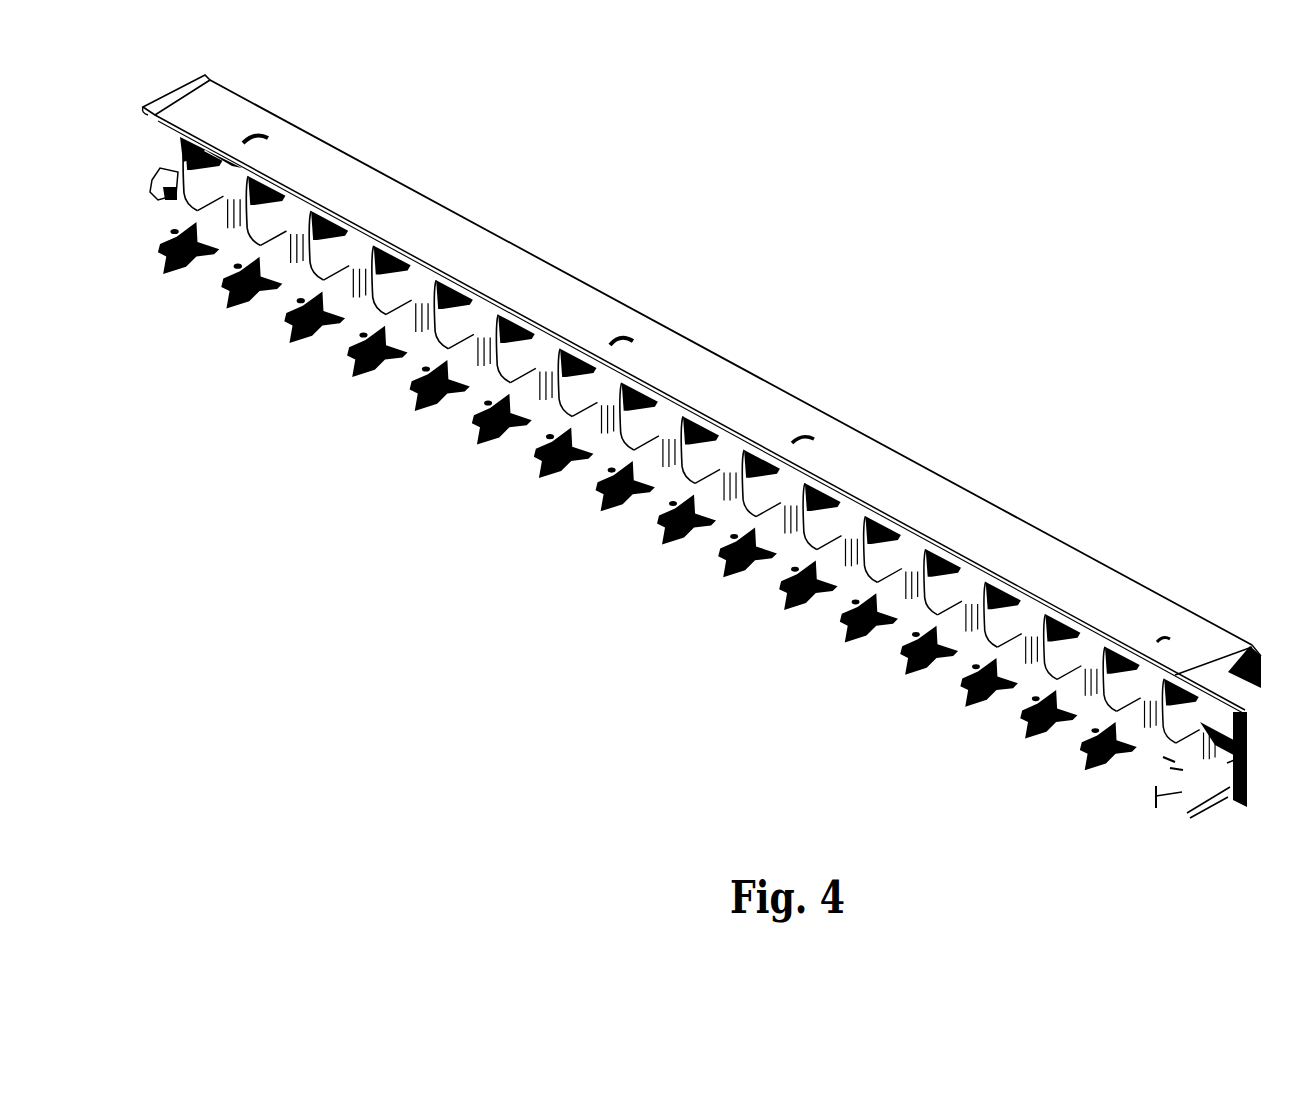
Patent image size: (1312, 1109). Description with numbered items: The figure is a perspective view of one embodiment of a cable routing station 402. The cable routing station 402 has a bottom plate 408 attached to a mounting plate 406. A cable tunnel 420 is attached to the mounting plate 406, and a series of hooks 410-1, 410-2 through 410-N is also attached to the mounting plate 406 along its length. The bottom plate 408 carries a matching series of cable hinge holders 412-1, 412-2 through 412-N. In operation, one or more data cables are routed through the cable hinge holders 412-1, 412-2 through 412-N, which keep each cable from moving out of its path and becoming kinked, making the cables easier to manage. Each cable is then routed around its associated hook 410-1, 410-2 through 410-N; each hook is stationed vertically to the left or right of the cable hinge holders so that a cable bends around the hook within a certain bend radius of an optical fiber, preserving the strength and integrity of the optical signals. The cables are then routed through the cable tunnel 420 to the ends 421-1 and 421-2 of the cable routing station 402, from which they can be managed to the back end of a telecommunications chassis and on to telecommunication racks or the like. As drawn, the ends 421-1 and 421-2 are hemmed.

The cable routing station 402 is at (694, 288).
The mounting plate 406 is at (782, 392).
The bottom plate 408 is at (1140, 797).
The hook 410-1 is at (207, 193).
The hook 410-2 is at (273, 223).
The hook 410-N is at (1197, 723).
The cable hinge holder 412-1 is at (173, 262).
The cable hinge holder 412-2 is at (212, 228).
The cable hinge holder 412-N is at (1090, 748).
The cable tunnel 420 is at (1262, 684).
The end 421-1 is at (174, 85).
The end 421-2 is at (1212, 660).